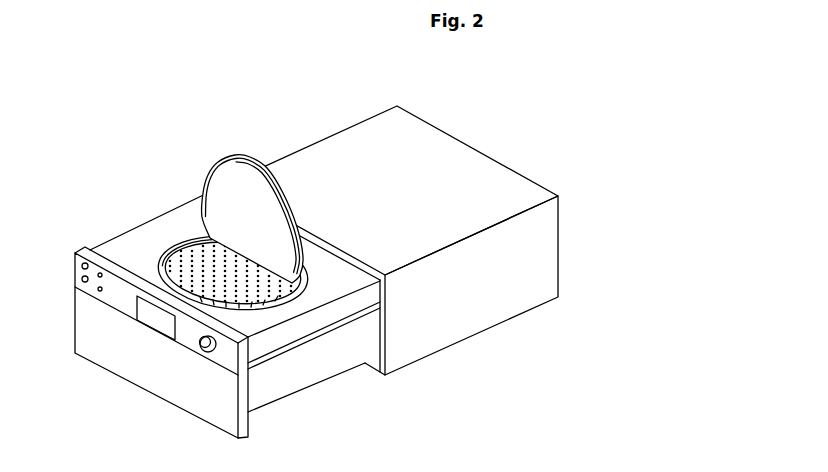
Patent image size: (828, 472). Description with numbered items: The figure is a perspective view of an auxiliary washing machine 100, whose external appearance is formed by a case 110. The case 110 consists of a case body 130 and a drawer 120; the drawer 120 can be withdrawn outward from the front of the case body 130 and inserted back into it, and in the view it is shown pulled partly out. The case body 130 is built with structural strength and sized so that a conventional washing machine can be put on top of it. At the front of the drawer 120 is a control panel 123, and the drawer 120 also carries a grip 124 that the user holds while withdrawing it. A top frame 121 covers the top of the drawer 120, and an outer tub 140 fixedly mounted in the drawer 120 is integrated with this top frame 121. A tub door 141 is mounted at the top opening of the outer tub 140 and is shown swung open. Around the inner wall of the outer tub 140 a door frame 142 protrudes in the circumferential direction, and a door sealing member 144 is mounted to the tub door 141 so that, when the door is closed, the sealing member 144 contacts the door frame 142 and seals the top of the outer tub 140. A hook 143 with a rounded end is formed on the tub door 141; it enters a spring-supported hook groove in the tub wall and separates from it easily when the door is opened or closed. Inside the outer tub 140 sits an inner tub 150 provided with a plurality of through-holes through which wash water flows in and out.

The auxiliary washing machine 100 is at (326, 66).
The case 110 is at (324, 265).
The drawer 120 is at (245, 349).
The top frame 121 is at (257, 322).
The control panel 123 is at (188, 345).
The grip 124 is at (150, 332).
The case body 130 is at (471, 285).
The outer tub 140 is at (230, 246).
The tub door 141 is at (234, 202).
The door frame 142 is at (170, 250).
The hook 143 is at (257, 160).
The door sealing member 144 is at (220, 162).
The inner tub 150 is at (243, 268).